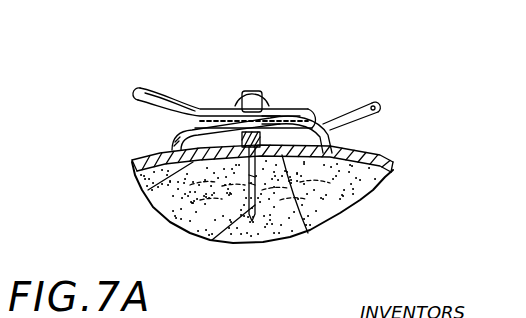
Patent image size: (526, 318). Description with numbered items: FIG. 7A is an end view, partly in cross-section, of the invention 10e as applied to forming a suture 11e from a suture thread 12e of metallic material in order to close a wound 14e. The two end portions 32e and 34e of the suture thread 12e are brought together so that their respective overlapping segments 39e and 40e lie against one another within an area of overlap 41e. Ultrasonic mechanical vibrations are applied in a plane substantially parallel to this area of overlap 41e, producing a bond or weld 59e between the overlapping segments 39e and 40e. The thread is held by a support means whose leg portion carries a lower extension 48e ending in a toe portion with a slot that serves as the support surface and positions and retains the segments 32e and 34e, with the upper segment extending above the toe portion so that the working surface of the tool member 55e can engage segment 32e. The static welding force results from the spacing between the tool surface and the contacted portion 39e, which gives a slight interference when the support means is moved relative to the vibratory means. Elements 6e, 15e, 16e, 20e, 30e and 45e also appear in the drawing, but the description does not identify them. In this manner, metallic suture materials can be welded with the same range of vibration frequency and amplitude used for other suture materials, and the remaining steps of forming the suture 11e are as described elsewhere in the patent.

The partial numeral (cut off) 6e is at (10, 23).
The invention 10e is at (133, 80).
The suture 11e is at (182, 101).
The suture thread 12e is at (380, 114).
The wound 14e is at (212, 240).
The plate 15e is at (397, 163).
The cushion body 16e is at (130, 161).
The outer surface 20e is at (180, 230).
The pin 30e is at (268, 240).
The end portion 32e is at (152, 97).
The end portion 34e is at (426, 83).
The overlapping segment 39e is at (222, 112).
The overlapping segment 40e is at (148, 190).
The area of overlap 41e is at (176, 126).
The hinge block 45e is at (270, 96).
The lower extension 48e is at (308, 233).
The tool member 55e is at (249, 96).
The bond or weld 59e is at (266, 113).